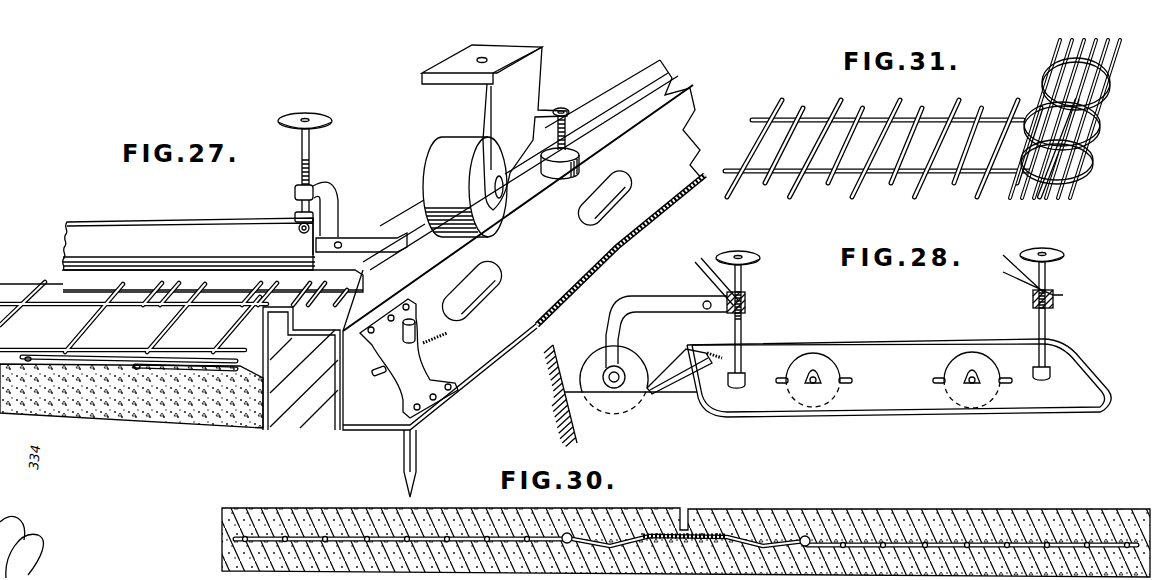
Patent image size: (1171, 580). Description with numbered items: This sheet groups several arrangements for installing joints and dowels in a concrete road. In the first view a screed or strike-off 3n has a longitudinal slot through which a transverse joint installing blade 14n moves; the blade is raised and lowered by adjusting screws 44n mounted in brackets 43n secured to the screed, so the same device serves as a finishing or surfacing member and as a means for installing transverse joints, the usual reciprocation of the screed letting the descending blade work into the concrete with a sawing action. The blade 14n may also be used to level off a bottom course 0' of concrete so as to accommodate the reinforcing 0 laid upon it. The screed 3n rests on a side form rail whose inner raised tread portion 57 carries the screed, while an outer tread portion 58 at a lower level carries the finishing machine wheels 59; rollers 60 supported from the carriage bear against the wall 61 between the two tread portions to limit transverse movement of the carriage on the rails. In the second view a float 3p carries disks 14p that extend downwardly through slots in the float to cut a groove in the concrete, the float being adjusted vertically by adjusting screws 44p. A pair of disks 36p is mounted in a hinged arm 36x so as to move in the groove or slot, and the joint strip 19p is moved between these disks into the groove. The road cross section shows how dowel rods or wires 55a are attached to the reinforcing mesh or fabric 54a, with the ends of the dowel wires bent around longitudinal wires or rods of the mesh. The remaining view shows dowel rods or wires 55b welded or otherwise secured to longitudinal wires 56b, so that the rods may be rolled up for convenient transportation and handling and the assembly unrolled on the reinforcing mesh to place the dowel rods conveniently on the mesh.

In FIG. 27, the transverse joint installing blade 14n is at (155, 229).
In FIG. 27, the adjusting screws 44n is at (301, 170).
In FIG. 27, the brackets 43n is at (330, 214).
In FIG. 27, the reinforcing 0 is at (173, 307).
In FIG. 27, the bottom course 0' is at (131, 412).
In FIG. 27, the screed or strike-off 3n is at (150, 272).
In FIG. 27, the inner raised tread portion 57 is at (265, 325).
In FIG. 27, the outer tread portion 58 is at (532, 198).
In FIG. 27, the finishing machine wheels 59 is at (437, 174).
In FIG. 27, the rollers 60 is at (582, 158).
In FIG. 27, the wall 61 is at (615, 110).
In FIG. 28, the float 3p is at (883, 352).
In FIG. 28, the hinged arm 36x is at (637, 302).
In FIG. 28, the disks 36p is at (588, 357).
In FIG. 28, the joint strip 19p is at (668, 376).
In FIG. 28, the adjusting screws 44p is at (741, 330).
In FIG. 28, the disks 14p is at (817, 358).
In FIG. 30, the reinforcing mesh or fabric 54a is at (870, 542).
In FIG. 30, the dowel rods or wires 55a is at (733, 537).
In FIG. 31, the dowel rods or wires 55b is at (952, 110).
In FIG. 31, the longitudinal wires 56b is at (753, 123).